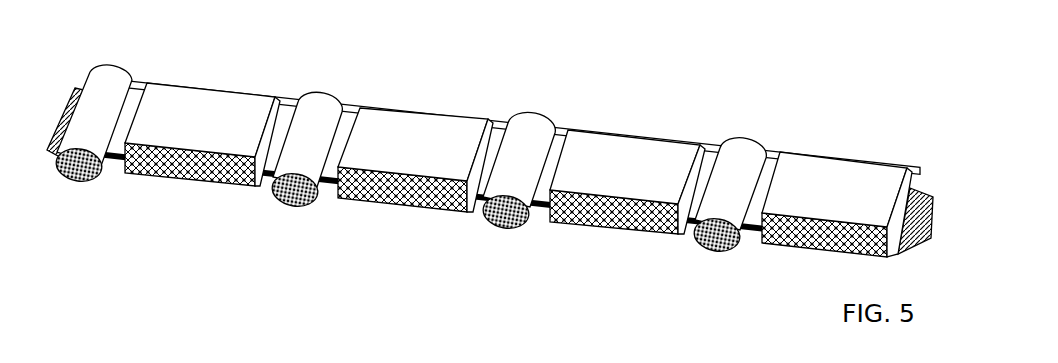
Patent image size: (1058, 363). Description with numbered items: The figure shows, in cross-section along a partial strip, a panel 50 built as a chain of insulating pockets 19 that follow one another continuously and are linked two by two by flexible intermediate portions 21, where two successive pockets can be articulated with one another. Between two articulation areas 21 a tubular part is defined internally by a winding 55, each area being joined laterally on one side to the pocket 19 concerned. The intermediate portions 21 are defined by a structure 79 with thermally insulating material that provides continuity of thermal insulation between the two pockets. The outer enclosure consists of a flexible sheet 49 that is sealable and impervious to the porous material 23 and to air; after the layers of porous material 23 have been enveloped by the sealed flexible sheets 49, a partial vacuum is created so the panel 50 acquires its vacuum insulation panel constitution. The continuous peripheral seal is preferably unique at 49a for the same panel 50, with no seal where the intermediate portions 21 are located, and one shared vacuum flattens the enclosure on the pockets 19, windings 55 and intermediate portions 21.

The insulating pocket 19 is at (222, 113).
The flexible intermediate portion 21 is at (342, 133).
The porous material 23 is at (413, 209).
The flexible sheet 49 is at (177, 107).
The seal 49a is at (66, 100).
The panel 50 is at (499, 188).
The winding 55 is at (87, 187).
The structure 79 is at (117, 160).